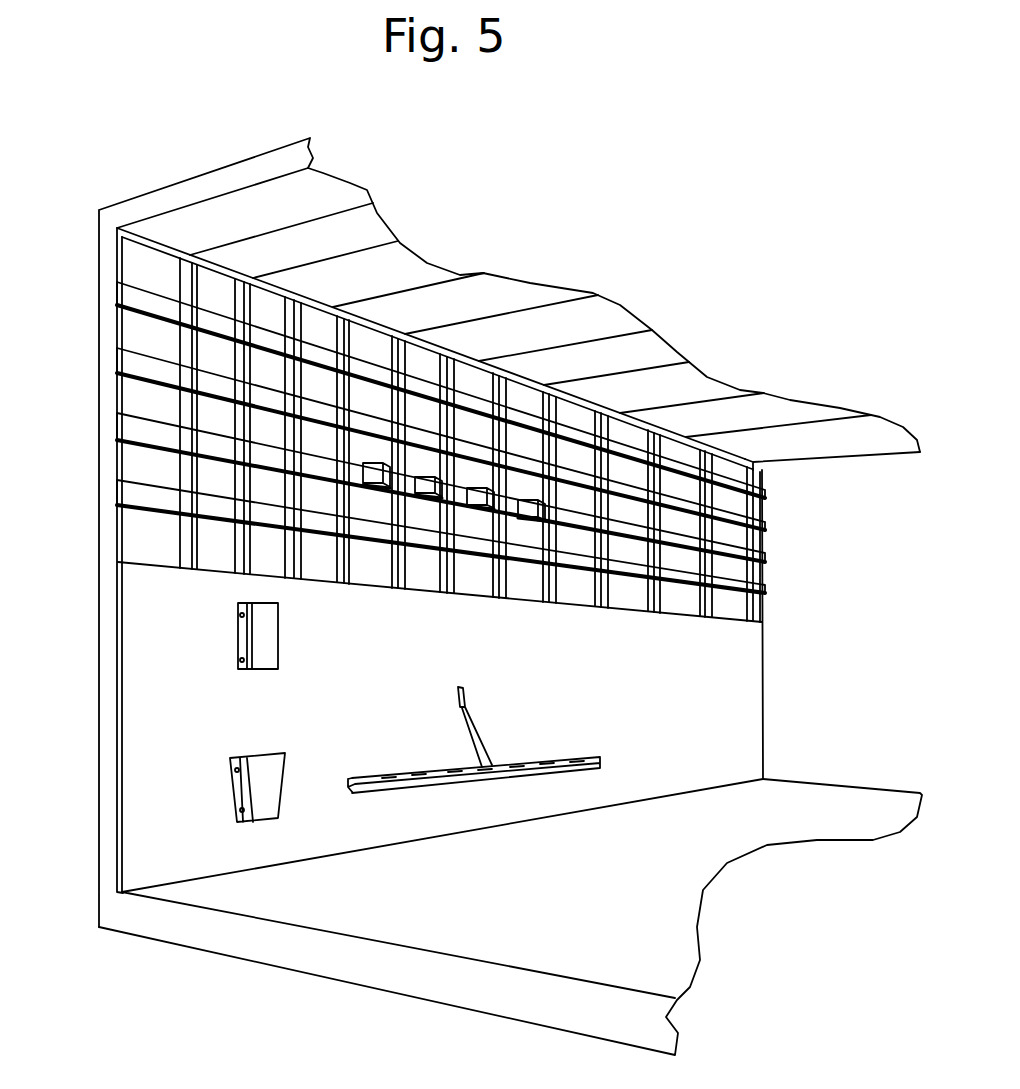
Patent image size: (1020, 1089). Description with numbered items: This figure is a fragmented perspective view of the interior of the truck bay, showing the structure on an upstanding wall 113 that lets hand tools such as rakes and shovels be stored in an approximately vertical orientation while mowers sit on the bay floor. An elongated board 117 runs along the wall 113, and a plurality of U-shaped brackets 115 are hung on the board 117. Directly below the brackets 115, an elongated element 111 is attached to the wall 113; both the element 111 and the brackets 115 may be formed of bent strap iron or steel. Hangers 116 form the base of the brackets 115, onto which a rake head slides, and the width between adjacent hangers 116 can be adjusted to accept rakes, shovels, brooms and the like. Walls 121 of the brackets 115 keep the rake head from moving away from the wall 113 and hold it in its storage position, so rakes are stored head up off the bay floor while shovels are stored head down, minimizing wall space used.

The elongated element 111 is at (520, 745).
The wall 113 is at (142, 710).
The brackets 115 is at (366, 440).
The hangers 116 is at (366, 440).
The elongated board 117 is at (148, 433).
The walls 121 is at (433, 460).